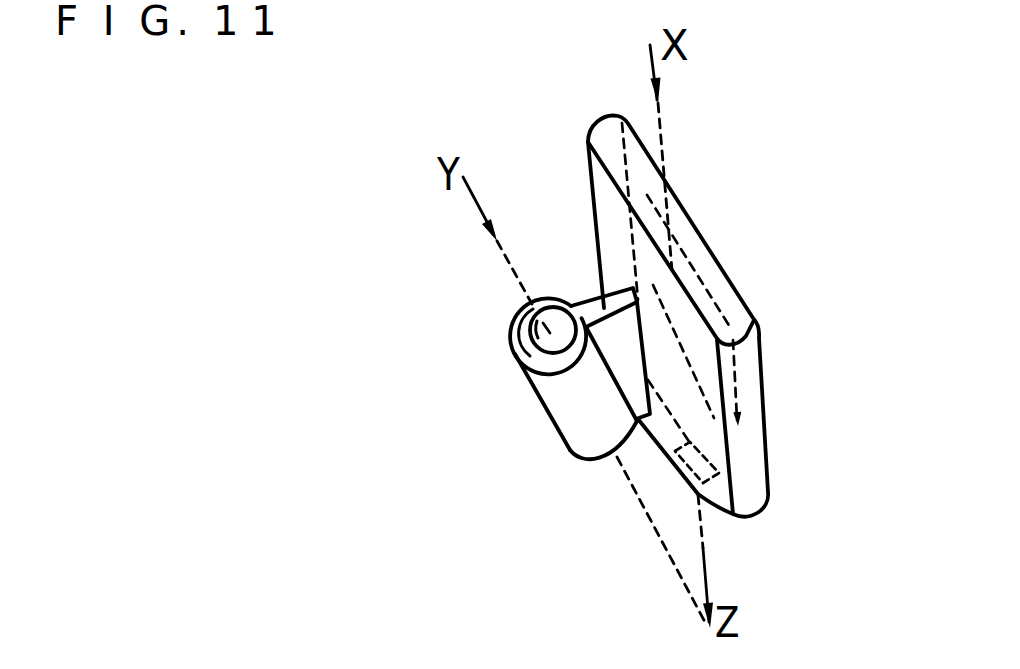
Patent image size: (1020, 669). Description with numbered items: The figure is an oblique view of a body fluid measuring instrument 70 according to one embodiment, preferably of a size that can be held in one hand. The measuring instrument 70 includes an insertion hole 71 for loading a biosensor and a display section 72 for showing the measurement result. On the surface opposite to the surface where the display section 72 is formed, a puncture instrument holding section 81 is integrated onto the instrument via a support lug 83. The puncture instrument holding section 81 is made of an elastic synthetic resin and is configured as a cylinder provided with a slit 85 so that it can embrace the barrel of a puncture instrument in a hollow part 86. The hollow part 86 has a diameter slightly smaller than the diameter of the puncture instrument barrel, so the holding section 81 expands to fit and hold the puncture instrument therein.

The body fluid measuring instrument 70 is at (713, 270).
The insertion hole 71 is at (687, 480).
The display section 72 is at (740, 367).
The puncture instrument holding section 81 is at (563, 392).
The support lug 83 is at (600, 299).
The slit 85 is at (511, 356).
The hollow part 86 is at (512, 320).